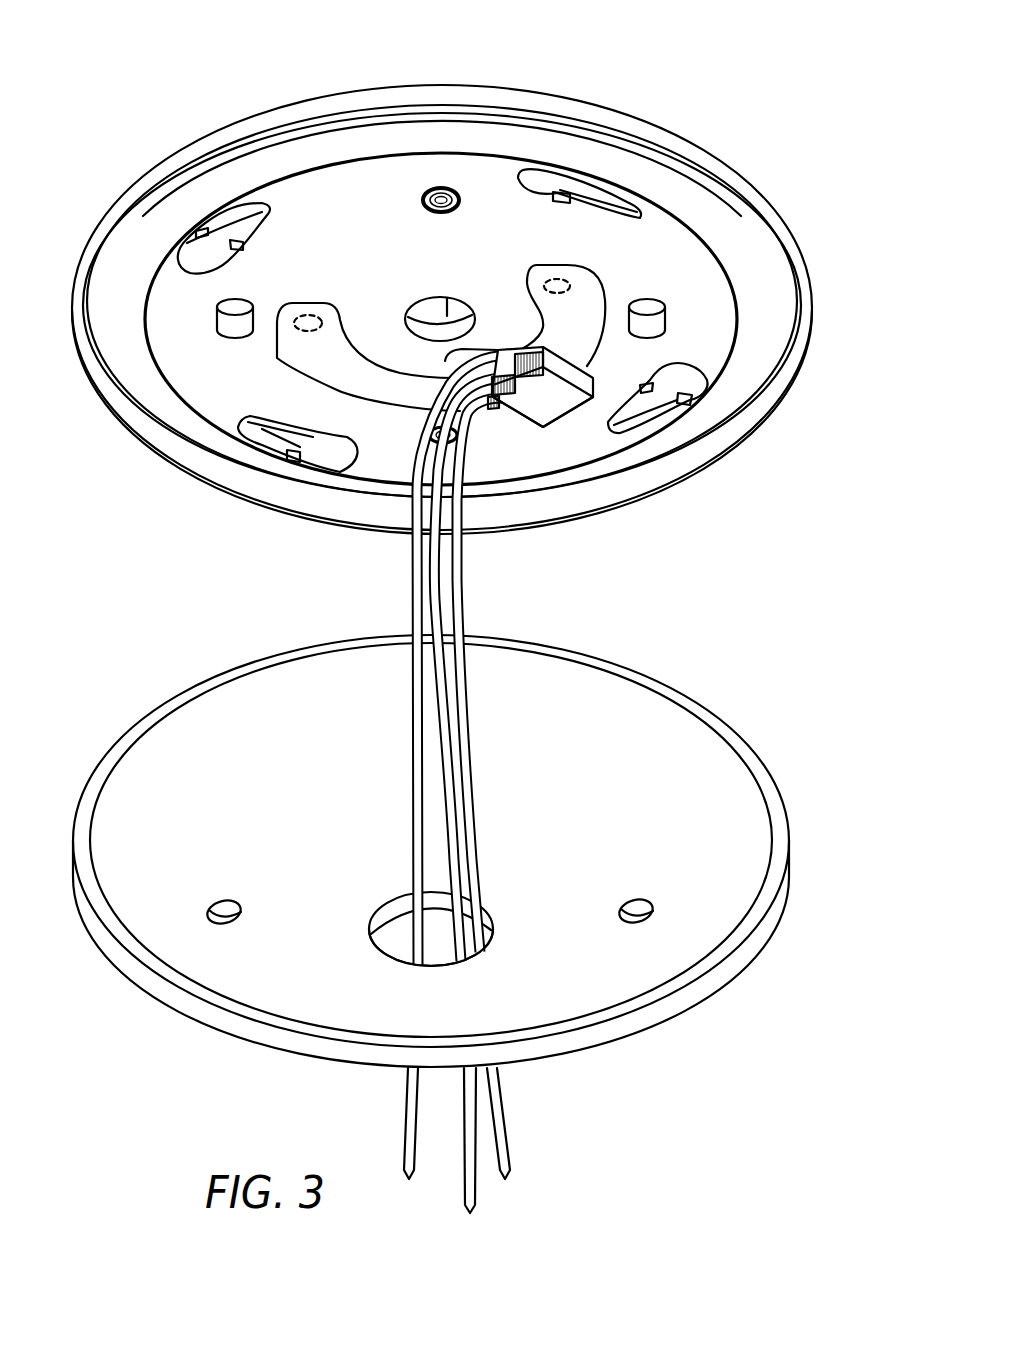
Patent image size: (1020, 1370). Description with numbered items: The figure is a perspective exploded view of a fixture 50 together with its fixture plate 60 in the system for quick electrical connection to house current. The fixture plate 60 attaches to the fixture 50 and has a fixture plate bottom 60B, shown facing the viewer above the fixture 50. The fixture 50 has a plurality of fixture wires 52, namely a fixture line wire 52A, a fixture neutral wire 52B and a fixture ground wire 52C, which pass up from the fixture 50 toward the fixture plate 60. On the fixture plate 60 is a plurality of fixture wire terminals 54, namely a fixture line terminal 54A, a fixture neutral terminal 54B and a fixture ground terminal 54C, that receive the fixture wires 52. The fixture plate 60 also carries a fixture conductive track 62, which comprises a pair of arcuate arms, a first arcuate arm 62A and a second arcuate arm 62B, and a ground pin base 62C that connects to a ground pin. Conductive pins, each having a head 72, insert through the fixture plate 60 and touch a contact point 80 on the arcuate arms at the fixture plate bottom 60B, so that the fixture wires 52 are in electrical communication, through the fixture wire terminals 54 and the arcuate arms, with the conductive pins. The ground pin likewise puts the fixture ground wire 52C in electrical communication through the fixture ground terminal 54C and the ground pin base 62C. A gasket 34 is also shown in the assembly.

The gasket 34 is at (773, 352).
The fixture 50 is at (793, 711).
The fixture wires 52 is at (529, 574).
The fixture line wire 52A is at (408, 1140).
The fixture neutral wire 52B is at (507, 1147).
The fixture ground wire 52C is at (464, 1198).
The fixture wire terminals 54 is at (680, 429).
The fixture line terminal 54A is at (600, 395).
The fixture neutral terminal 54B is at (570, 418).
The fixture ground terminal 54C is at (580, 410).
The fixture plate 60 is at (716, 63).
The fixture plate bottom 60B is at (771, 403).
The fixture conductive track 62 is at (372, 300).
The first arcuate arm 62A is at (568, 276).
The second arcuate arm 62B is at (297, 343).
The ground pin base 62C is at (488, 325).
The head 72 is at (446, 189).
The contact point 80 is at (308, 316).